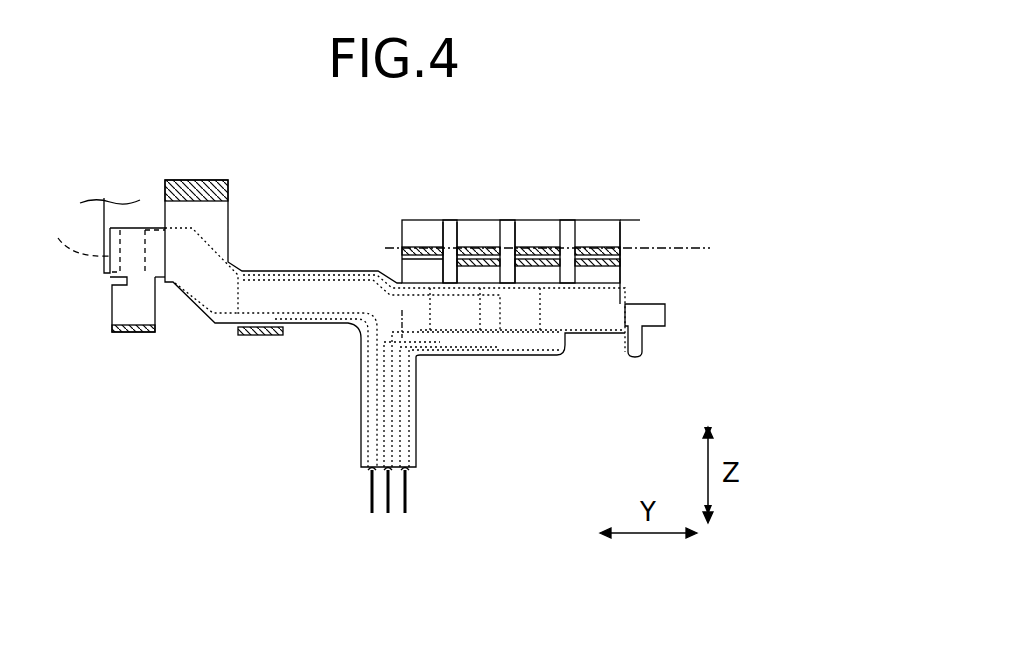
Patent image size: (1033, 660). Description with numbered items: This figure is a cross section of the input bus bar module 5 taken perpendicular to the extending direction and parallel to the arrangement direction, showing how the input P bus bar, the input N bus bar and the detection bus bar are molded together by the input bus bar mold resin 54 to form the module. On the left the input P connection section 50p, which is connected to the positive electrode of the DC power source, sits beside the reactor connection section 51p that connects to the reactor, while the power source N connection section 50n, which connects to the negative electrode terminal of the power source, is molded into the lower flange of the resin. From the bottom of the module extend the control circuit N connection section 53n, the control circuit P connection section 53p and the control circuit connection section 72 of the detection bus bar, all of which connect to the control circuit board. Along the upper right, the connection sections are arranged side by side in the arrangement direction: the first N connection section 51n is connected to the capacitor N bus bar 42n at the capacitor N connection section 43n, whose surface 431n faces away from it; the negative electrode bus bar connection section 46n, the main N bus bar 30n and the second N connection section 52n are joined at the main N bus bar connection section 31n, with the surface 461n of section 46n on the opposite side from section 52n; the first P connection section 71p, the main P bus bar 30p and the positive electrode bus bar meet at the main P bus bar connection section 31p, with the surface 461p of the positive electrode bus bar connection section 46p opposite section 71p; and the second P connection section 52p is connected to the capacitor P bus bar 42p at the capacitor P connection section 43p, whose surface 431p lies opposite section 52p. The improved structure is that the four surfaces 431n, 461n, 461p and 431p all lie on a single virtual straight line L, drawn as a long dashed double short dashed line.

The input bus bar module 5 is at (246, 150).
The reactor connection section 51p is at (104, 240).
The input P connection section 50p is at (125, 335).
The input bus bar mold resin 54 is at (223, 317).
The power source N connection section 50n is at (262, 335).
The capacitor N connection section 43n is at (437, 251).
The capacitor N bus bar 42n is at (412, 252).
The capacitor P connection section 43p is at (688, 267).
The capacitor P bus bar 42p is at (620, 250).
The negative electrode bus bar connection section 46n is at (440, 240).
The surface of the negative electrode bus bar connection section 461n is at (477, 240).
The positive electrode bus bar connection section 46p is at (537, 250).
The surface of the positive electrode bus bar connection section 461p is at (553, 250).
The surface of the capacitor N connection section 431n is at (436, 250).
The surface of the capacitor P connection section 431p is at (613, 242).
The main N bus bar connection section 31n is at (361, 225).
The main N bus bar 30n is at (437, 250).
The main P bus bar connection section 31p is at (502, 185).
The main P bus bar 30p is at (505, 250).
The virtual straight line L is at (672, 247).
The second P connection section 52p is at (633, 350).
The first P connection section 71p is at (545, 268).
The second N connection section 52n is at (480, 272).
The first N connection section 51n is at (437, 265).
The control circuit N connection section 53n is at (370, 492).
The control circuit P connection section 53p is at (388, 512).
The control circuit connection section 72 is at (405, 495).